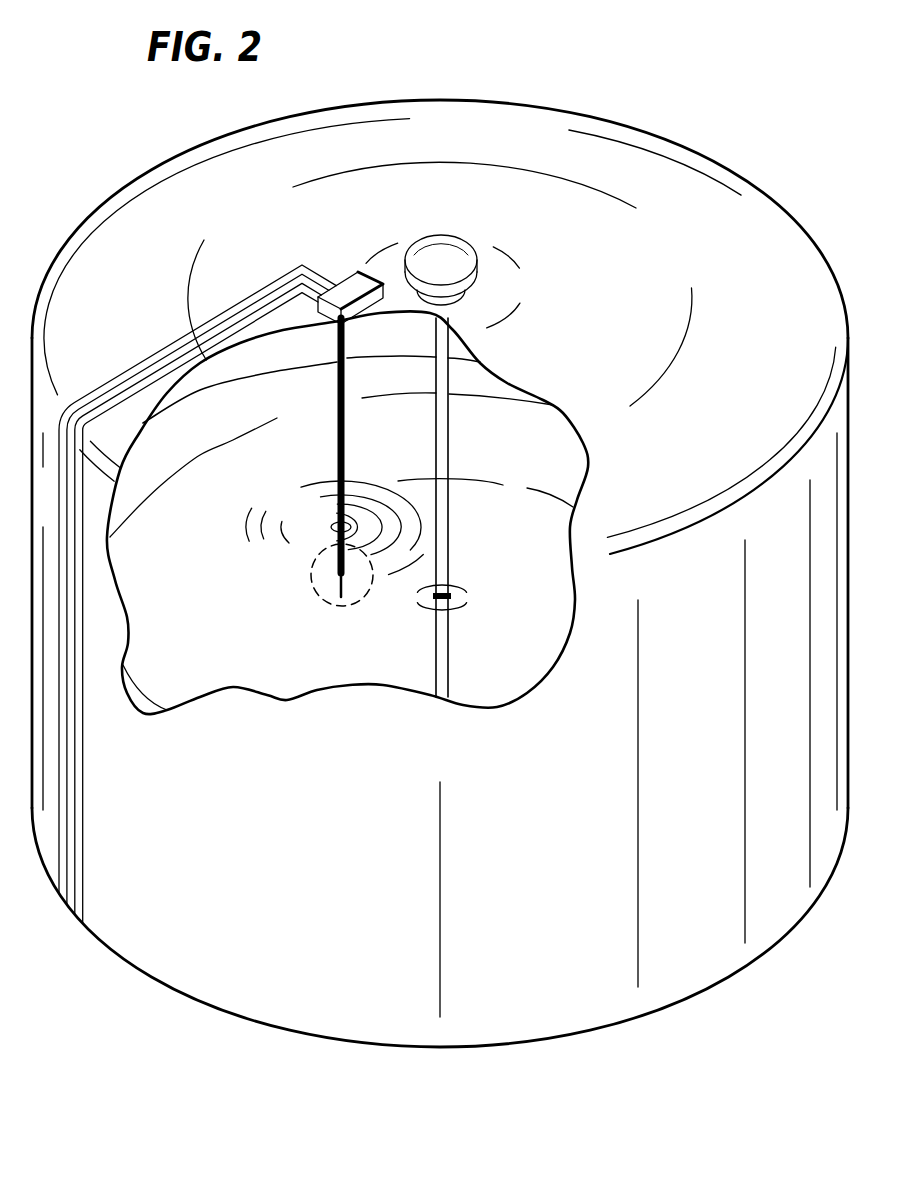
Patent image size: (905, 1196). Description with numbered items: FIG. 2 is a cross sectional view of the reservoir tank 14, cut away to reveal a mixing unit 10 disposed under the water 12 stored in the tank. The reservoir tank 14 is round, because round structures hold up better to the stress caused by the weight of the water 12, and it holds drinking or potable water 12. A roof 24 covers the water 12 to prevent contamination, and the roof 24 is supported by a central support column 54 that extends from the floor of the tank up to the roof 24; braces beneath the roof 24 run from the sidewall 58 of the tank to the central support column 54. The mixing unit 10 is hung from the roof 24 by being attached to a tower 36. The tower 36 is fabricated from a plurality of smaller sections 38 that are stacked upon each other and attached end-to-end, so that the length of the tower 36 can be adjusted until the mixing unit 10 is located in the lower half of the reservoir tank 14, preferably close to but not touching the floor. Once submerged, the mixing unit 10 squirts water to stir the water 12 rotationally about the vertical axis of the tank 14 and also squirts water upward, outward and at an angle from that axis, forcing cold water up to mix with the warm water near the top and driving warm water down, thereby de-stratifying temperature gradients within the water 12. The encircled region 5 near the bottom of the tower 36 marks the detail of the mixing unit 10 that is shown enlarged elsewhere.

The reservoir tank 14 is at (724, 121).
The roof 24 is at (613, 305).
The sidewall 58 is at (709, 773).
The water 12 is at (524, 570).
The central support column 54 is at (442, 412).
The tower 36 is at (374, 430).
The sections 38 is at (332, 464).
The mixing unit 10 is at (330, 586).
The sensing region 5 is at (333, 603).